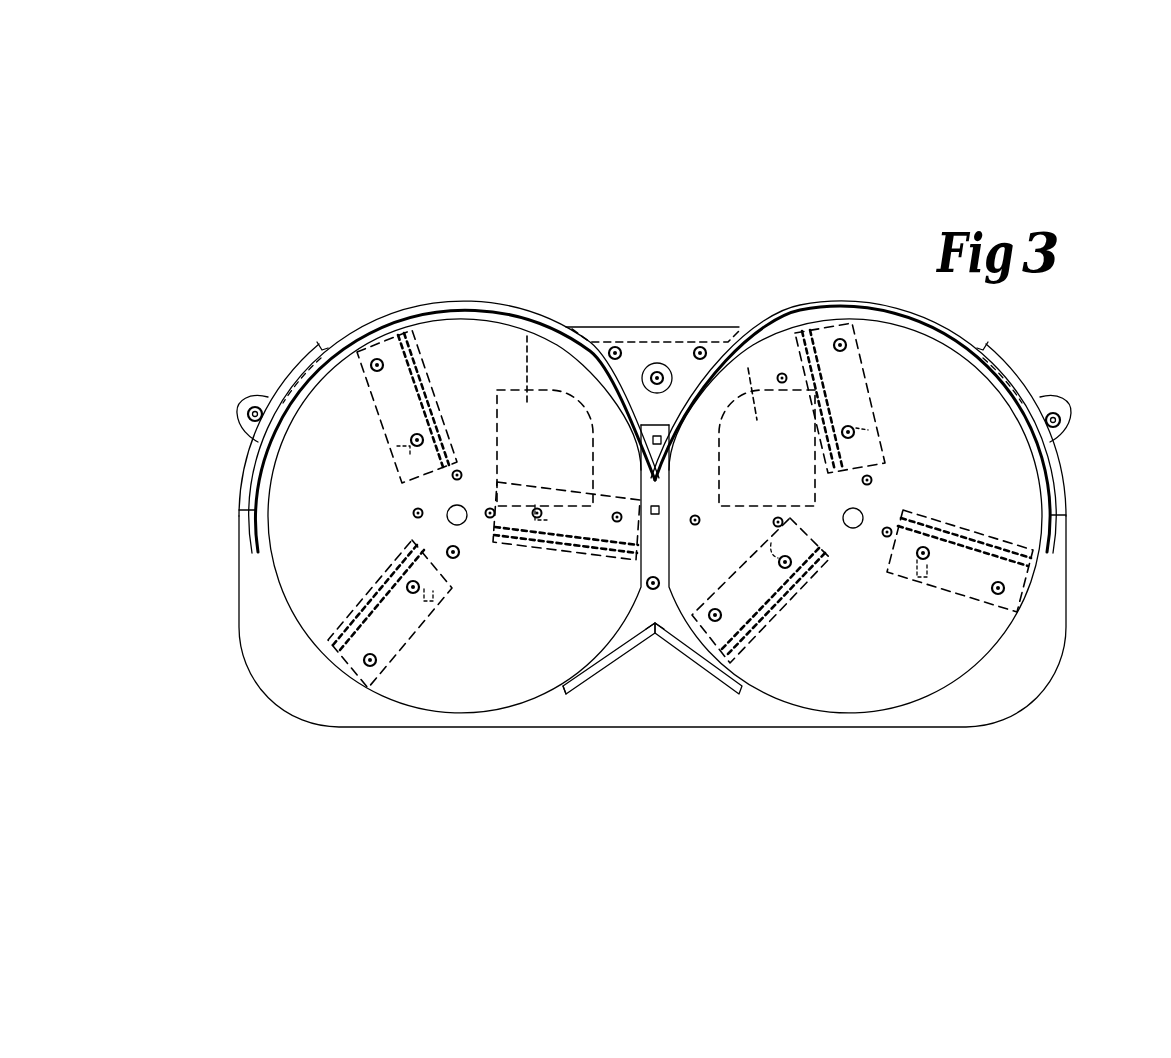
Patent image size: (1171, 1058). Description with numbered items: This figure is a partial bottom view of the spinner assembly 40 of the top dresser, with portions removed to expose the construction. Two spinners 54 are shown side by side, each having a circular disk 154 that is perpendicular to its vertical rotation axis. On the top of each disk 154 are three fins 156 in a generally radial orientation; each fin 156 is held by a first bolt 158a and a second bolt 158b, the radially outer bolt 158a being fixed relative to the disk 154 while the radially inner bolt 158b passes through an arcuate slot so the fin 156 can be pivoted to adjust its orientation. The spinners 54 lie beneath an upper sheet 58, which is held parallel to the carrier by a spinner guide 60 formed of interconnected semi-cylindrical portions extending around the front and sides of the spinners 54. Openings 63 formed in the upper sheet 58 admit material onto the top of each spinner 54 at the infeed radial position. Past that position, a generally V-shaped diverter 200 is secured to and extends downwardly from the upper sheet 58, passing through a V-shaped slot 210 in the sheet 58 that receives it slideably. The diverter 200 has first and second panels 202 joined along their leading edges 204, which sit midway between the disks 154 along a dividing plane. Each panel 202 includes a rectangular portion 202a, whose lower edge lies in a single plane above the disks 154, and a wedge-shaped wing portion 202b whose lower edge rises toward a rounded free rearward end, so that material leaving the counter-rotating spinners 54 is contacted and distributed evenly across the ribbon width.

The spinner assembly 40 is at (789, 55).
The spinner 54 is at (457, 724).
The upper sheet 58 is at (1035, 670).
The spinner guide 60 is at (465, 303).
The openings 63 is at (538, 305).
The circular disk 154 is at (270, 569).
The fins 156 is at (360, 590).
The first bolts 158a is at (425, 578).
The second bolts 158b is at (380, 662).
The diverter 200 is at (660, 745).
The panels 202 is at (698, 730).
The rectangular portion 202a is at (664, 642).
The wing portion 202b is at (700, 665).
The leading edges 204 is at (652, 634).
The V-shaped slot 210 is at (565, 690).